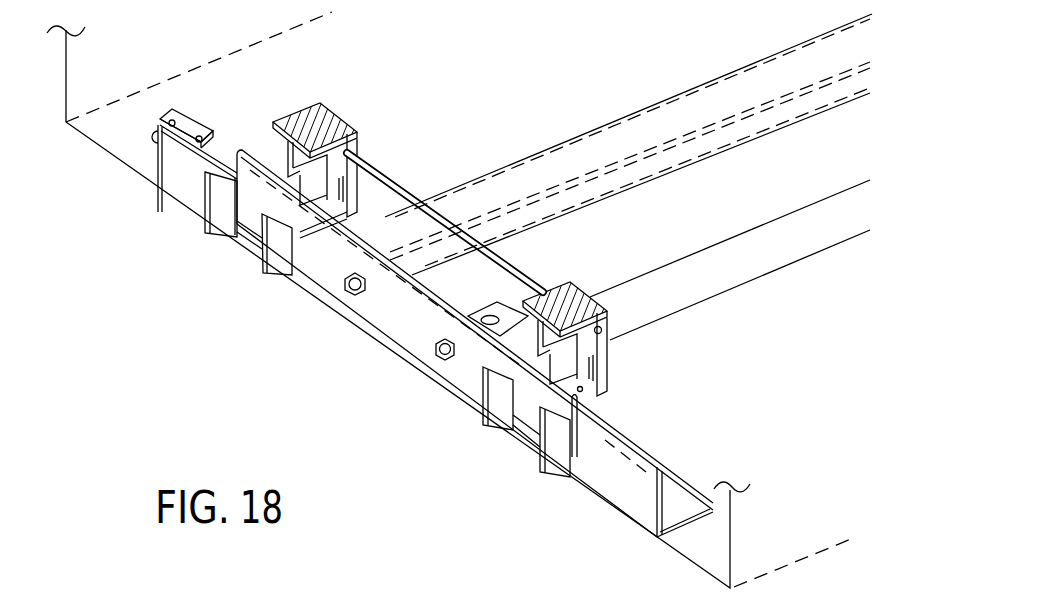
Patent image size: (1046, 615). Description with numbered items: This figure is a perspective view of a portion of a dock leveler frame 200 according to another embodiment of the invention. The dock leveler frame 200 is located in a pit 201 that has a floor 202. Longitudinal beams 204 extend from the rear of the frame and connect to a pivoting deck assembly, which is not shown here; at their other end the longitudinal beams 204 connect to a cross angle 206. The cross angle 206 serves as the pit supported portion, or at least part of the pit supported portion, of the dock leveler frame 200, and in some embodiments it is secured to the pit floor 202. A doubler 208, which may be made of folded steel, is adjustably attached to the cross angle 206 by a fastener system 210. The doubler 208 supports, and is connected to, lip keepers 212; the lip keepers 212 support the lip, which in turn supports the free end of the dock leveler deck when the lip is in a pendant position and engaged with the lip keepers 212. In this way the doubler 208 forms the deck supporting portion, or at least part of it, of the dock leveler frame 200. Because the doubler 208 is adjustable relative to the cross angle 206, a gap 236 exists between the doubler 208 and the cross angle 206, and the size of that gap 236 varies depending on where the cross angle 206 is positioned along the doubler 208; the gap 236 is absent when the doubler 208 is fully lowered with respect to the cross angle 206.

The dock leveler frame 200 is at (421, 108).
The pit 201 is at (154, 66).
The pit floor 202 is at (113, 130).
The longitudinal beams 204 is at (627, 116).
The cross angle 206 is at (183, 187).
The doubler 208 is at (312, 263).
The fastener system 210 is at (352, 306).
The lip keepers 212 is at (200, 217).
The gap 236 is at (600, 396).